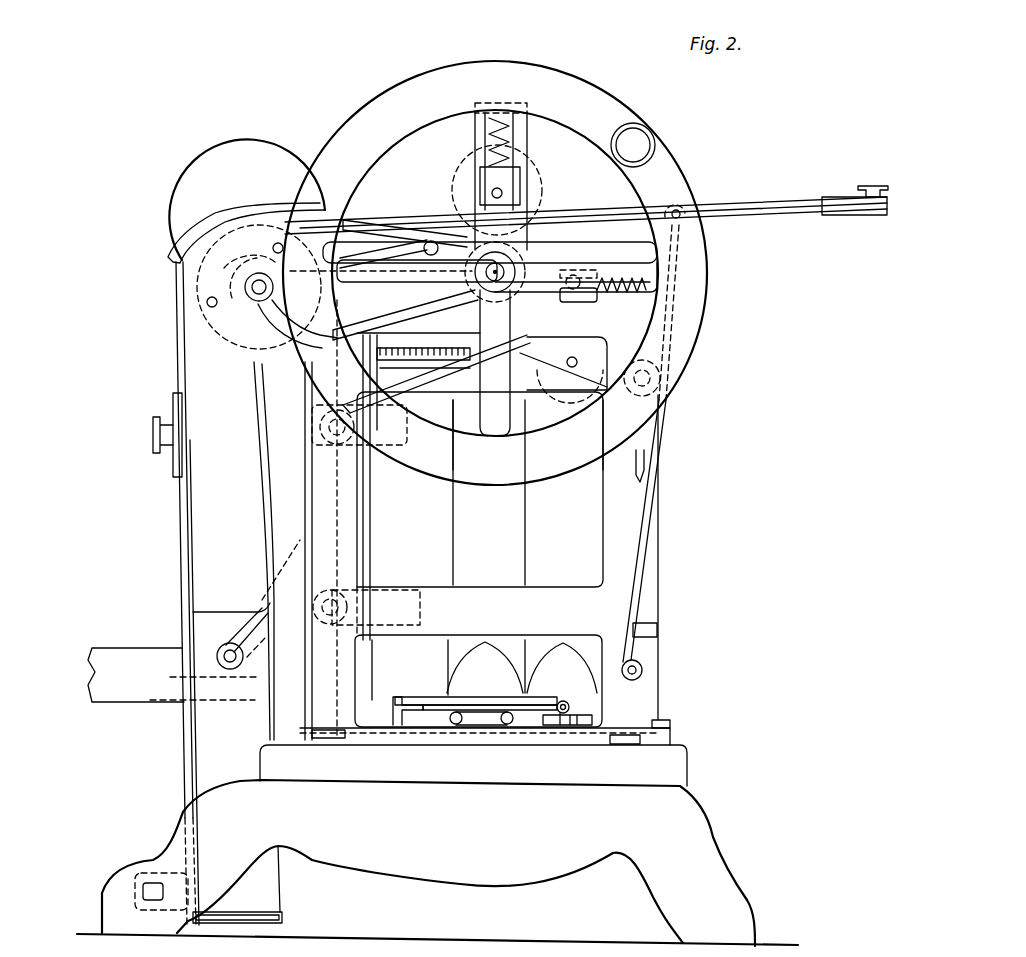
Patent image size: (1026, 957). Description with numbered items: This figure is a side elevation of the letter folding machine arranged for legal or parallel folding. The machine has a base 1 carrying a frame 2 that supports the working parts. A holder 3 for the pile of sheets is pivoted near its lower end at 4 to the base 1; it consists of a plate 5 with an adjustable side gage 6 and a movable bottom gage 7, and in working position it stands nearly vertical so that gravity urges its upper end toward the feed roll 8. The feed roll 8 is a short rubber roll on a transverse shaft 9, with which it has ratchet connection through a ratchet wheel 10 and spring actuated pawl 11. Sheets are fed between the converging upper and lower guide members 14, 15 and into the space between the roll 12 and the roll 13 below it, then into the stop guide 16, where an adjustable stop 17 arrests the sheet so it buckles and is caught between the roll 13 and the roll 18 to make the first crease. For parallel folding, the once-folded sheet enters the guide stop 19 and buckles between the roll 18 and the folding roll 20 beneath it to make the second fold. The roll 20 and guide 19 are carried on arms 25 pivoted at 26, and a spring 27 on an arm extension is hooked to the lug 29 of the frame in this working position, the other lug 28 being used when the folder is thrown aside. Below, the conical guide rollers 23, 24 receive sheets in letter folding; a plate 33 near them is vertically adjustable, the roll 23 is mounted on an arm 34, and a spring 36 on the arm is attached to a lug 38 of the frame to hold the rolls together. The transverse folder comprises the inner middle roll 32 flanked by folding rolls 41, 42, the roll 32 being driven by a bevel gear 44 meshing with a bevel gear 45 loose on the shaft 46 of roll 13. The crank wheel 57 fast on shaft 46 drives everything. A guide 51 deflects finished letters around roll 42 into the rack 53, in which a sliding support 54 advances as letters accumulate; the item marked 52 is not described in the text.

The base 1 is at (492, 865).
The frame 2 is at (417, 587).
The holder 3 is at (185, 570).
The pivot support 4 is at (152, 893).
The plate 5 is at (192, 612).
The adjustable side gage 6 is at (200, 527).
The movable bottom gage 7 is at (305, 890).
The feed roll 8 is at (188, 290).
The transverse shaft 9 is at (252, 295).
The ratchet wheel 10 is at (315, 310).
The spring actuated pawl 11 is at (262, 258).
The roll 12 is at (538, 198).
The roll 13 is at (435, 292).
The upper guide member 14 is at (400, 220).
The lower guide member 15 is at (375, 258).
The stop guide 16 is at (586, 207).
The adjustable stop 17 is at (832, 197).
The roll 18 is at (608, 300).
The guide stop 19 is at (420, 395).
The folding roll 20 is at (608, 348).
The guide roller 23 is at (485, 667).
The guide roller 24 is at (562, 668).
The arms 25 is at (597, 375).
The pivot 26 is at (650, 378).
The spring 27 is at (650, 563).
The lug 28 is at (695, 207).
The lug 29 is at (658, 630).
The inner middle roll 32 is at (480, 489).
The plate 33 is at (428, 697).
The arm 34 is at (485, 742).
The spring 36 is at (569, 704).
The lug 38 is at (560, 725).
The folding roll 41 is at (582, 451).
The folding roll 42 is at (467, 452).
The bevel gear 44 is at (495, 272).
The bevel gear 45 is at (548, 240).
The shaft 46 is at (381, 272).
The guide 51 is at (396, 580).
The bolt 52 is at (408, 490).
The rack 53 is at (113, 655).
The support 54 is at (335, 522).
The crank wheel 57 is at (712, 292).